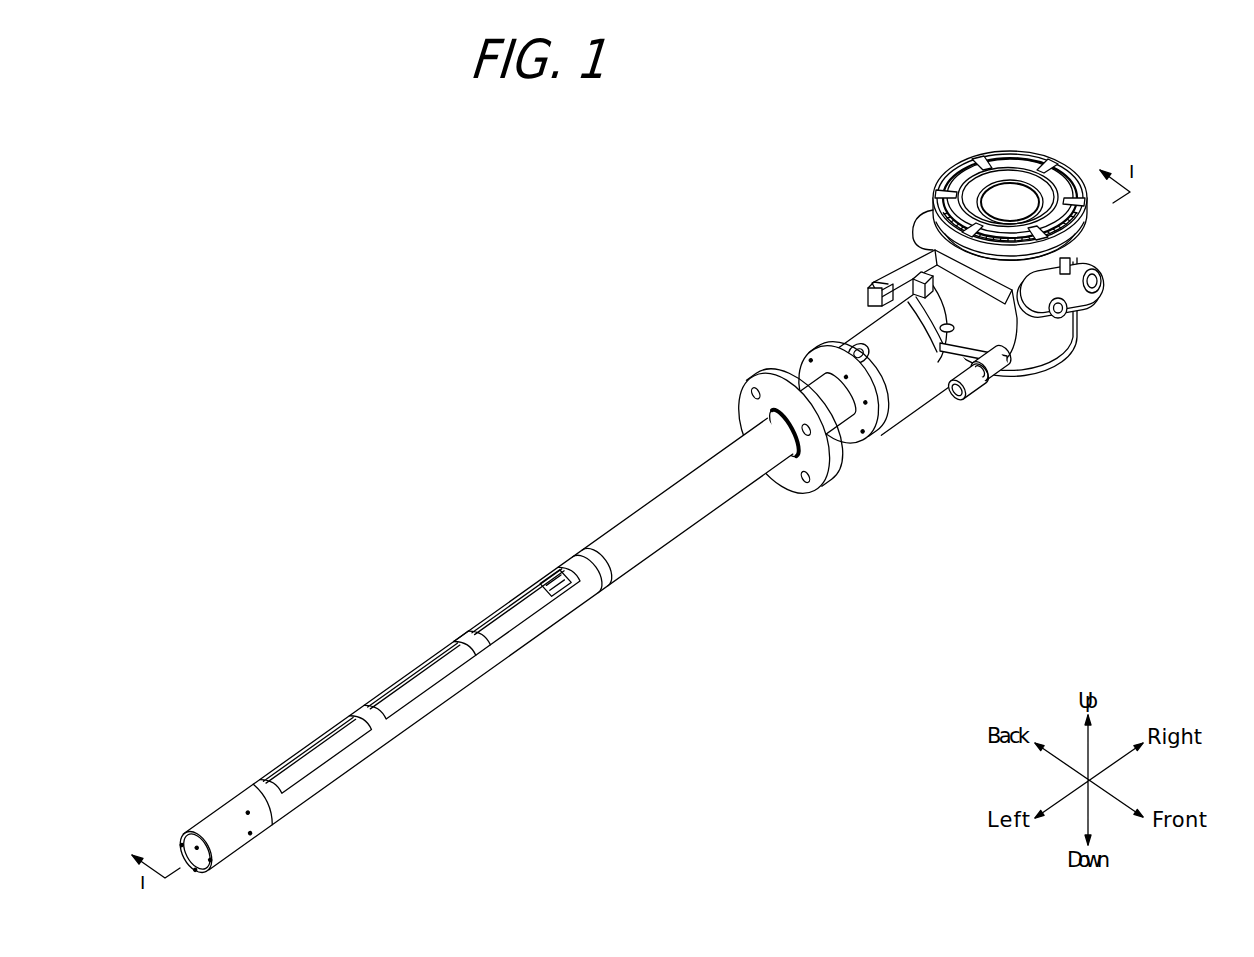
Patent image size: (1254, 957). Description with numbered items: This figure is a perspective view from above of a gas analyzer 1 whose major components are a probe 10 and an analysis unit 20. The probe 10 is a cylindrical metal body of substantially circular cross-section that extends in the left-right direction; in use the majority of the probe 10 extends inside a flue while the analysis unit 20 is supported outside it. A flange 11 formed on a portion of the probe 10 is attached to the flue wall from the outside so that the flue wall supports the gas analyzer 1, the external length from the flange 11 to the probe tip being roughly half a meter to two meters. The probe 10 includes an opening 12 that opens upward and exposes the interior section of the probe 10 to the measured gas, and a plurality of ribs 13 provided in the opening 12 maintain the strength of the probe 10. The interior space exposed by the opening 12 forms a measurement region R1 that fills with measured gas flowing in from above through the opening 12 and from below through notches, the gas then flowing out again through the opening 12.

The gas analyzer 1 is at (497, 233).
The probe 10 is at (538, 637).
The flange 11 is at (762, 378).
The opening 12 is at (307, 770).
The ribs 13 is at (458, 647).
The measurement region R1 is at (402, 703).
The analysis unit 20 is at (1085, 315).